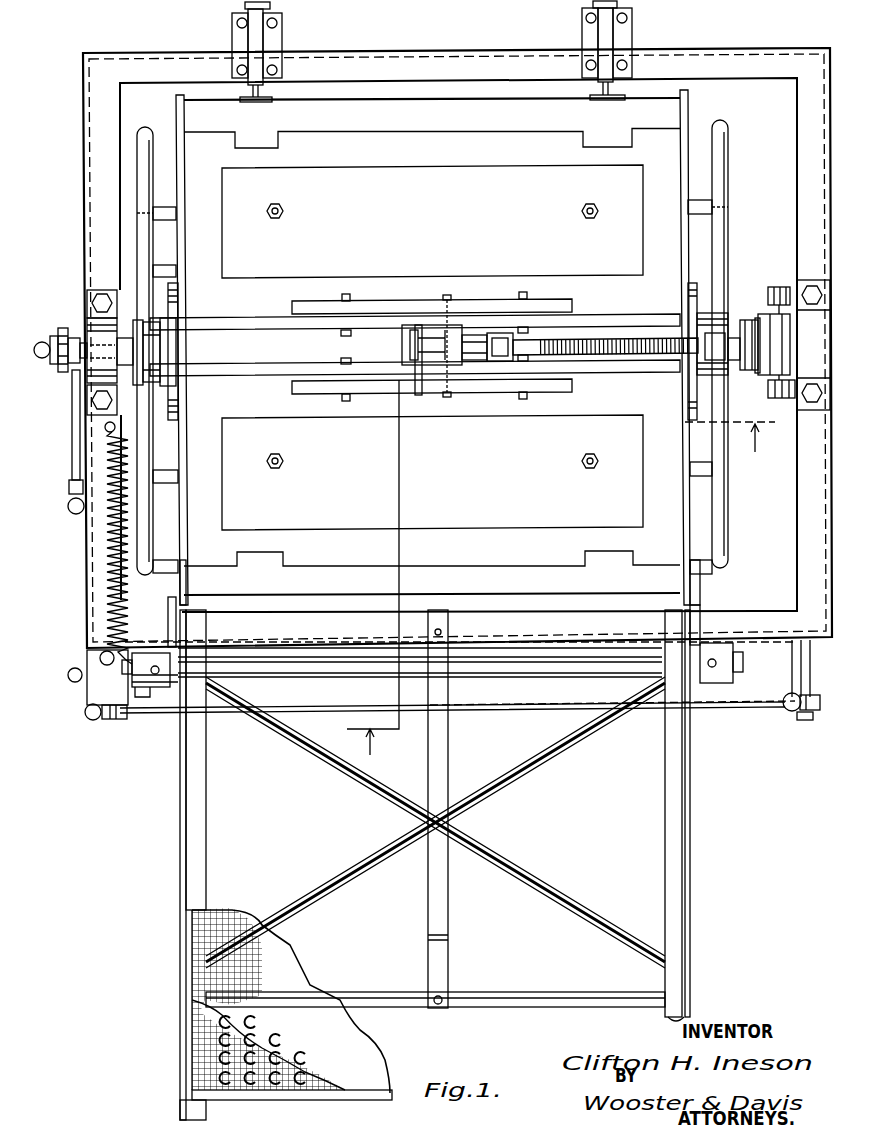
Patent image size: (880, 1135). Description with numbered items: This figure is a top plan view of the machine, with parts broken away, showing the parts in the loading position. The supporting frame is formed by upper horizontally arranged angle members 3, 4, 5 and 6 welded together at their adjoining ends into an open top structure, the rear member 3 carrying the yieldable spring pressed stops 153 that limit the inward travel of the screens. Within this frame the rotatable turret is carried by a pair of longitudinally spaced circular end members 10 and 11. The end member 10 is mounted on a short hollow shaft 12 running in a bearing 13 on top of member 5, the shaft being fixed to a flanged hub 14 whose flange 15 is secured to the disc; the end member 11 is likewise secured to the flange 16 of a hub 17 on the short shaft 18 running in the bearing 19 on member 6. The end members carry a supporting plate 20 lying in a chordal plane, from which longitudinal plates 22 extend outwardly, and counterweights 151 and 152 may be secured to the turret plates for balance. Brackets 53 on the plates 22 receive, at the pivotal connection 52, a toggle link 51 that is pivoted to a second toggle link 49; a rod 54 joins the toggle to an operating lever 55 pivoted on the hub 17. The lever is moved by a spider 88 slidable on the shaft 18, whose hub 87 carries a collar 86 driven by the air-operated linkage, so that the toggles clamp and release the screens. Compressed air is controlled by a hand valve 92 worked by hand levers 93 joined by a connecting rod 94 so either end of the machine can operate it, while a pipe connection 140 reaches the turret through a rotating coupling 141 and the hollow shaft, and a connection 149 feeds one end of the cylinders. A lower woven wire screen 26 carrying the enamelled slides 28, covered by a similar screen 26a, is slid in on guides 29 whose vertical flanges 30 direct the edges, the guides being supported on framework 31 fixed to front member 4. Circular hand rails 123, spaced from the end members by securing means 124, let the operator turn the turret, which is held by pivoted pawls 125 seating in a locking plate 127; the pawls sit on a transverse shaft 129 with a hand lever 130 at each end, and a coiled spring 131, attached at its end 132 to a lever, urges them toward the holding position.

The angle member 3 is at (482, 55).
The angle member 4 is at (496, 626).
The angle member 5 is at (96, 580).
The angle member 6 is at (797, 530).
The end member 10 is at (184, 168).
The end member 11 is at (680, 154).
The hollow shaft 12 is at (126, 352).
The bearing 13 is at (90, 318).
The flanged hub 14 is at (165, 356).
The flange 15 is at (178, 304).
The flange 16 is at (688, 297).
The hub 17 is at (712, 313).
The short shaft 18 is at (758, 318).
The bearing 19 is at (813, 345).
The supporting plate 20 is at (466, 136).
The longitudinal plate 22 is at (314, 331).
The woven wire screen 26 is at (229, 1096).
The woven wire screen 26a is at (195, 968).
The slides 28 is at (272, 1086).
The guides 29 is at (206, 836).
The vertical flange 30 is at (180, 836).
The framework 31 is at (497, 796).
The toggle link 49 is at (503, 362).
The toggle link 51 is at (488, 335).
The pivotal connection 52 is at (426, 396).
The brackets 53 is at (402, 347).
The rod 54 is at (574, 346).
The operating lever 55 is at (720, 340).
The collar 86 is at (770, 392).
The hub 87 is at (748, 372).
The spider 88 is at (773, 287).
The control valve 92 is at (90, 665).
The hand-operated levers 93 is at (95, 722).
The connecting rod 94 is at (485, 712).
The hand rail 123 is at (155, 238).
The securing means 124 is at (166, 212).
The pawls 125 is at (168, 632).
The locking plate 127 is at (178, 587).
The transverse shaft 129 is at (325, 678).
The hand lever 130 is at (140, 686).
The coiled spring 131 is at (104, 546).
The spring end 132 is at (85, 712).
The pipe connection 140 is at (72, 420).
The coupling 141 is at (62, 368).
The connection 149 is at (125, 672).
The counterweight 151 is at (410, 172).
The counterweight 152 is at (460, 300).
The spring pressed stops 153 is at (268, 100).